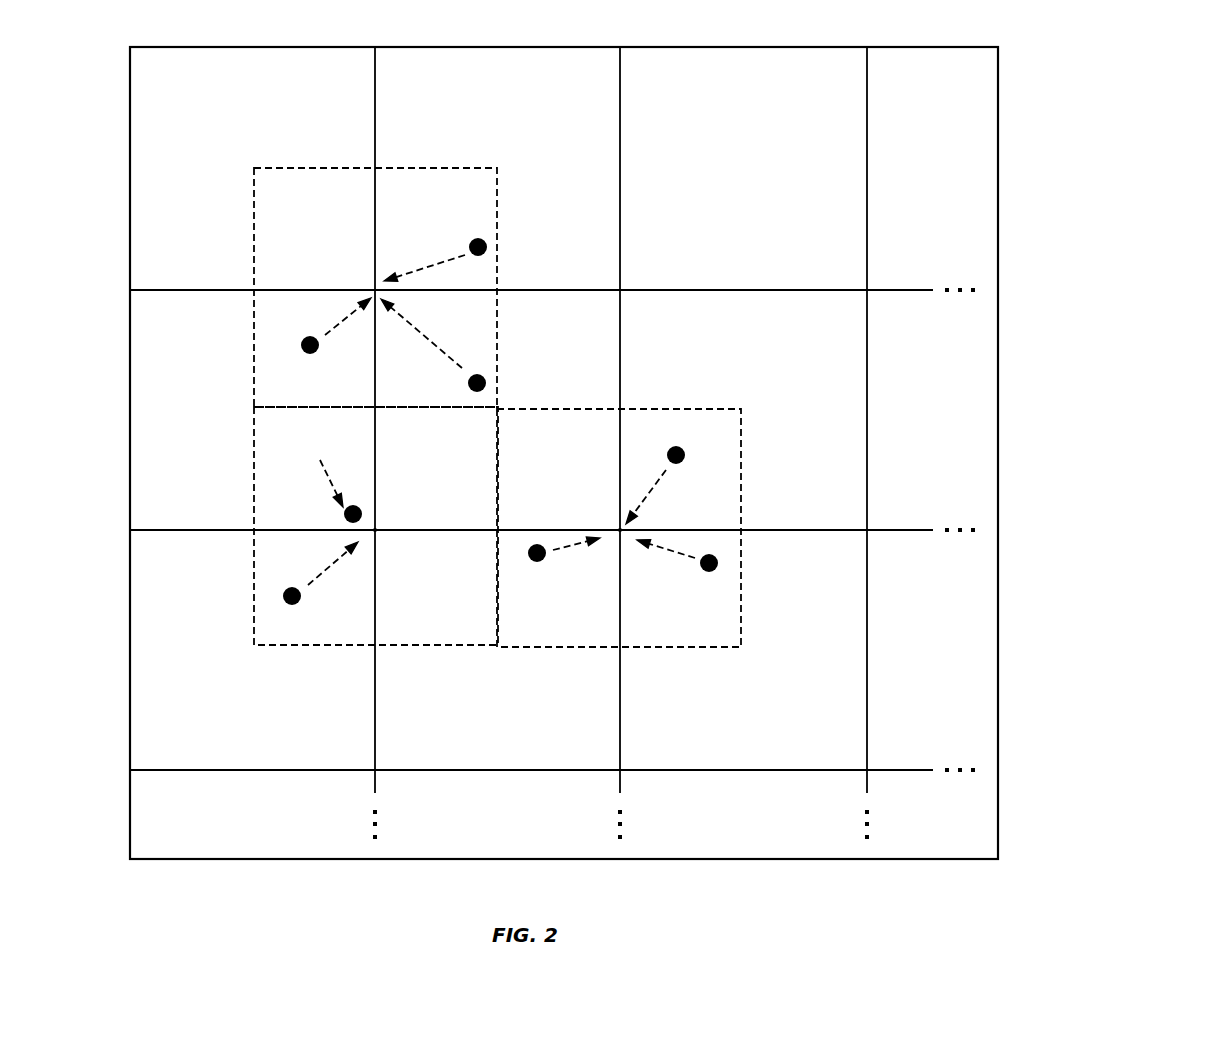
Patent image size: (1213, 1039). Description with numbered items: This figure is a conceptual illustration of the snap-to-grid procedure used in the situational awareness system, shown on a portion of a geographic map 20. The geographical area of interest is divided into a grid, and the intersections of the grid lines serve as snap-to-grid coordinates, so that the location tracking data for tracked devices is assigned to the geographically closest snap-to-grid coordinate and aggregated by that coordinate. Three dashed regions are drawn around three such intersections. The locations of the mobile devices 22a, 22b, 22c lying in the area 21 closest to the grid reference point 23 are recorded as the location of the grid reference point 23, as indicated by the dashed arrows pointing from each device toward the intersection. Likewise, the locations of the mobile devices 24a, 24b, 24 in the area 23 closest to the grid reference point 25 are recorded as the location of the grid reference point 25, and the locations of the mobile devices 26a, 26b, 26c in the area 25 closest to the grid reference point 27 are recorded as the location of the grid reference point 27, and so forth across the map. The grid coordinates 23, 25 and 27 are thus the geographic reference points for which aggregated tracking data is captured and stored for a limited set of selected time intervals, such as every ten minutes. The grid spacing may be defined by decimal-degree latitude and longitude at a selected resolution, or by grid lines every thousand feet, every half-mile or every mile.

The geographic map 20 is at (1107, 88).
The area 21 is at (375, 274).
The mobile device 22a is at (329, 343).
The mobile device 22b is at (433, 348).
The mobile device 22c is at (435, 242).
The grid reference point 23 is at (375, 290).
The mobile device 24 is at (422, 579).
The mobile device 24a is at (318, 588).
The mobile device 24b is at (330, 476).
The grid reference point 25 is at (375, 530).
The mobile device 26a is at (660, 470).
The mobile device 26b is at (555, 566).
The mobile device 26c is at (678, 573).
The grid reference point 27 is at (577, 475).